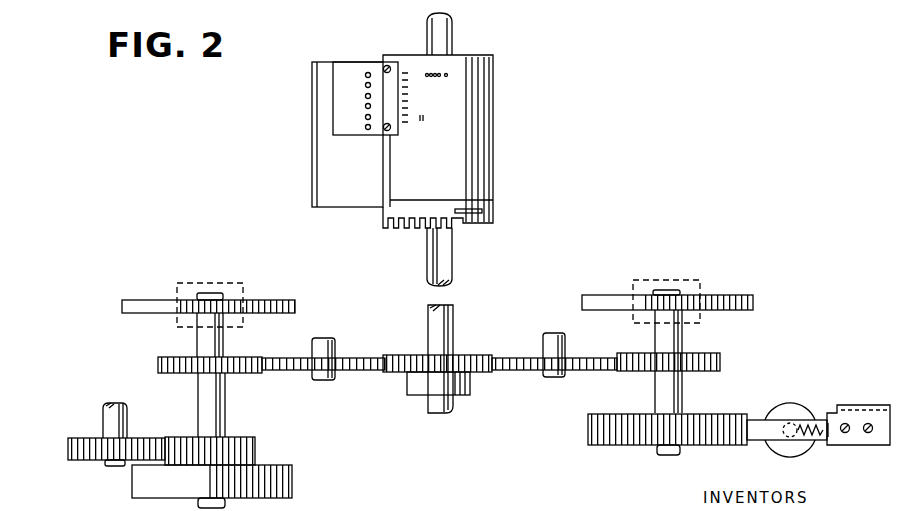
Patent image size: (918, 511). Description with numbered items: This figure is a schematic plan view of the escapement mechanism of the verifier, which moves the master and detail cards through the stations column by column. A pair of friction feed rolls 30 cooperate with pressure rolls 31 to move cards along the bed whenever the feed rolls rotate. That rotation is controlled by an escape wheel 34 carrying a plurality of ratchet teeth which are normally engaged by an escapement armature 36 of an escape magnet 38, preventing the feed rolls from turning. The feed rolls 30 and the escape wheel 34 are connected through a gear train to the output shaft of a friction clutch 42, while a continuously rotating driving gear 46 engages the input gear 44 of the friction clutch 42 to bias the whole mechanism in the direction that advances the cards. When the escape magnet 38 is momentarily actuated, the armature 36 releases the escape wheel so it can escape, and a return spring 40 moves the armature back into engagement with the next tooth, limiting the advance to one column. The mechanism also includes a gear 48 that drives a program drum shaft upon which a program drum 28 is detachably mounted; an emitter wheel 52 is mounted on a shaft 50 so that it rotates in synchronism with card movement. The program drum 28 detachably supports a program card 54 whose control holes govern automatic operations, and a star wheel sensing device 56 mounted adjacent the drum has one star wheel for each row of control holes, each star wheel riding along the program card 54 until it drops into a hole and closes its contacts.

The program drum 28 is at (497, 90).
The friction feed rolls 30 is at (283, 300).
The pressure rolls 31 is at (233, 282).
The escape wheel 34 is at (588, 428).
The escapement armature 36 is at (758, 420).
The escape magnet 38 is at (778, 404).
The return spring 40 is at (828, 411).
The friction clutch 42 is at (292, 476).
The input gear 44 is at (258, 446).
The driving gear 46 is at (140, 443).
The gear 48 is at (470, 355).
The shaft 50 is at (455, 320).
The emitter wheel 52 is at (484, 209).
The program card 54 is at (493, 184).
The star wheel sensing device 56 is at (381, 83).